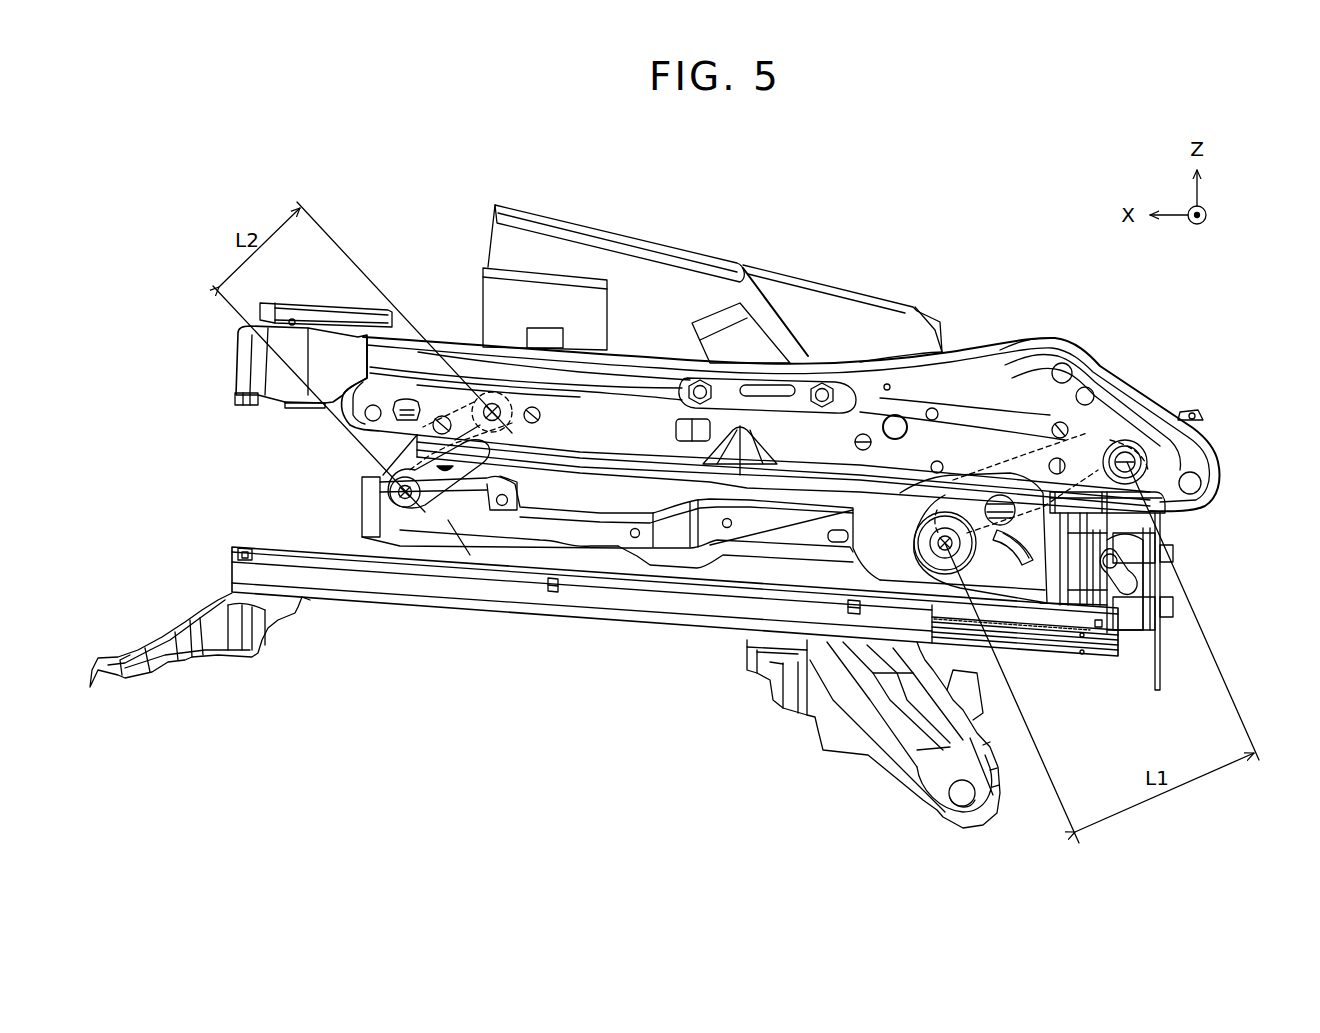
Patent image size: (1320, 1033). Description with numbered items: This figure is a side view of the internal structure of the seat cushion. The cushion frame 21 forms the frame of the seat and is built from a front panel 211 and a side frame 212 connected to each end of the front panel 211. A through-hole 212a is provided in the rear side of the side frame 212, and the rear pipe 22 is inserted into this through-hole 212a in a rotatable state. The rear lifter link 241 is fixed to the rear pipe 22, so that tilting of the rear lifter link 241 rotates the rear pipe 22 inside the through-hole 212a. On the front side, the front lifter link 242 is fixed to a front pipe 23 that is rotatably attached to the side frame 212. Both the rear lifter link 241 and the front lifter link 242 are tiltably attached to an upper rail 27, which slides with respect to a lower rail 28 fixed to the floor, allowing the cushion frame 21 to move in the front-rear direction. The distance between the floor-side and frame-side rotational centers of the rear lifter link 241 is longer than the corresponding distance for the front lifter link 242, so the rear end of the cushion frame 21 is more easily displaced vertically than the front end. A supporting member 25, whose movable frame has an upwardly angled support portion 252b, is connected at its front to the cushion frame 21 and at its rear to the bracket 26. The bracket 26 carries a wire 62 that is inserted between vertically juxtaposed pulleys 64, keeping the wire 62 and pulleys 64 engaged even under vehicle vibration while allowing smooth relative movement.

The cushion frame 21 is at (224, 343).
The front panel 211 is at (243, 375).
The side frame 212 is at (1067, 346).
The through-hole 212a is at (1134, 461).
The rear pipe 22 is at (1128, 455).
The front pipe 23 is at (449, 465).
The rear lifter link 241 is at (949, 515).
The front lifter link 242 is at (385, 491).
The supporting member 25 is at (855, 279).
The support portion 252b is at (636, 242).
The bracket 26 is at (1174, 640).
The upper rail 27 is at (1058, 640).
The lower rail 28 is at (639, 607).
The wire 62 is at (1130, 574).
The pulley 64 is at (1147, 553).